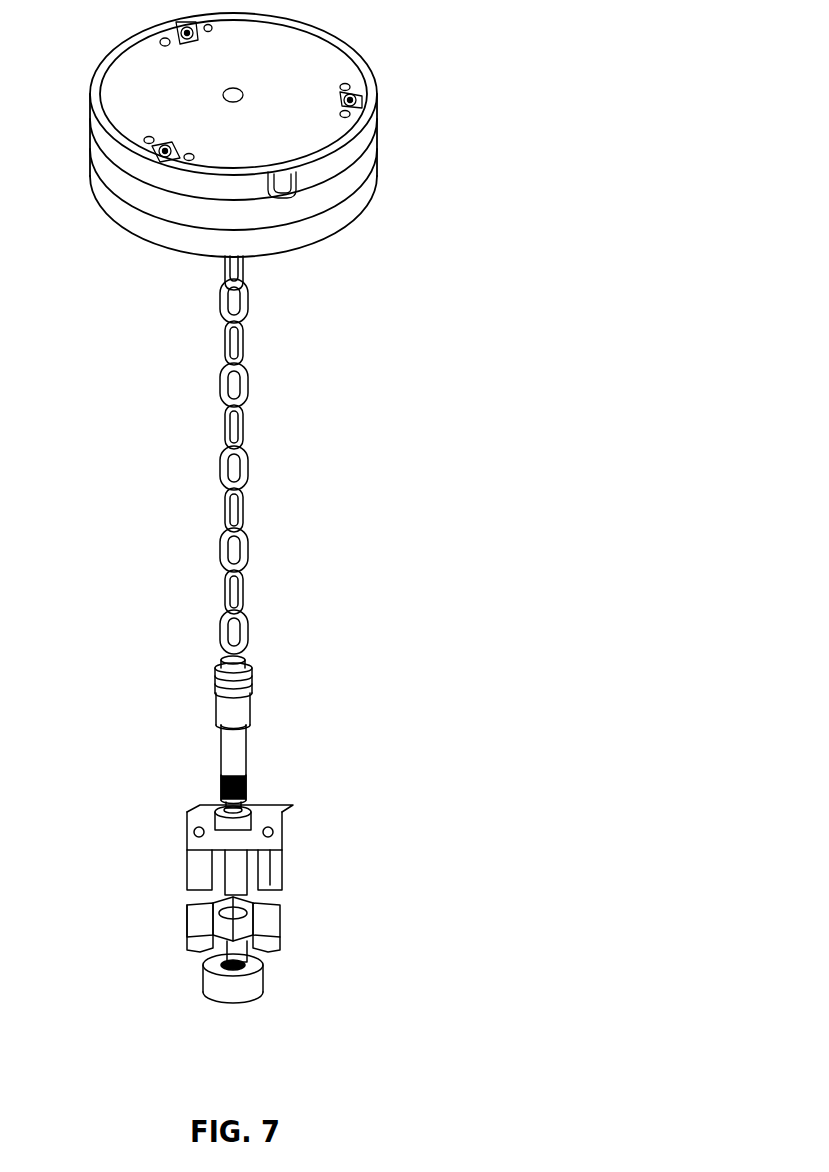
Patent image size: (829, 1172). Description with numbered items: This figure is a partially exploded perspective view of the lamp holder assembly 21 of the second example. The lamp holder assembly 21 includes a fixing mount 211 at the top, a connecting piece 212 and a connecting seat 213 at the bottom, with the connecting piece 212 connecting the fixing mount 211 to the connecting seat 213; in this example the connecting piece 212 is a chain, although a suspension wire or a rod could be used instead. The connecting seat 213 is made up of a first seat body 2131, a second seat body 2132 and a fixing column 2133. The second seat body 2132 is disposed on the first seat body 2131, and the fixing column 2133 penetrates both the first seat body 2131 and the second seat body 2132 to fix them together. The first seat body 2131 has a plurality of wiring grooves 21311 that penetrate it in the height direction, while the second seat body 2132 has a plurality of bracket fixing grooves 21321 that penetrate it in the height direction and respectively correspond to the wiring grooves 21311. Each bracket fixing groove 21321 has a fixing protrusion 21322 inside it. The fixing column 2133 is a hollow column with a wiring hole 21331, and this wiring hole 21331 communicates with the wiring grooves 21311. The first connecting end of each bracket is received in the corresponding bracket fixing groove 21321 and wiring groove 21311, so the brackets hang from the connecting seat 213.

The lamp holder assembly 21 is at (358, 470).
The fixing mount 211 is at (328, 62).
The connecting piece 212 is at (247, 402).
The connecting seat 213 is at (349, 897).
The first seat body 2131 is at (273, 948).
The wiring groove 21311 is at (197, 903).
The second seat body 2132 is at (263, 813).
The bracket fixing groove 21321 is at (277, 835).
The fixing protrusion 21322 is at (273, 860).
The fixing column 2133 is at (275, 672).
The wiring hole 21331 is at (248, 747).